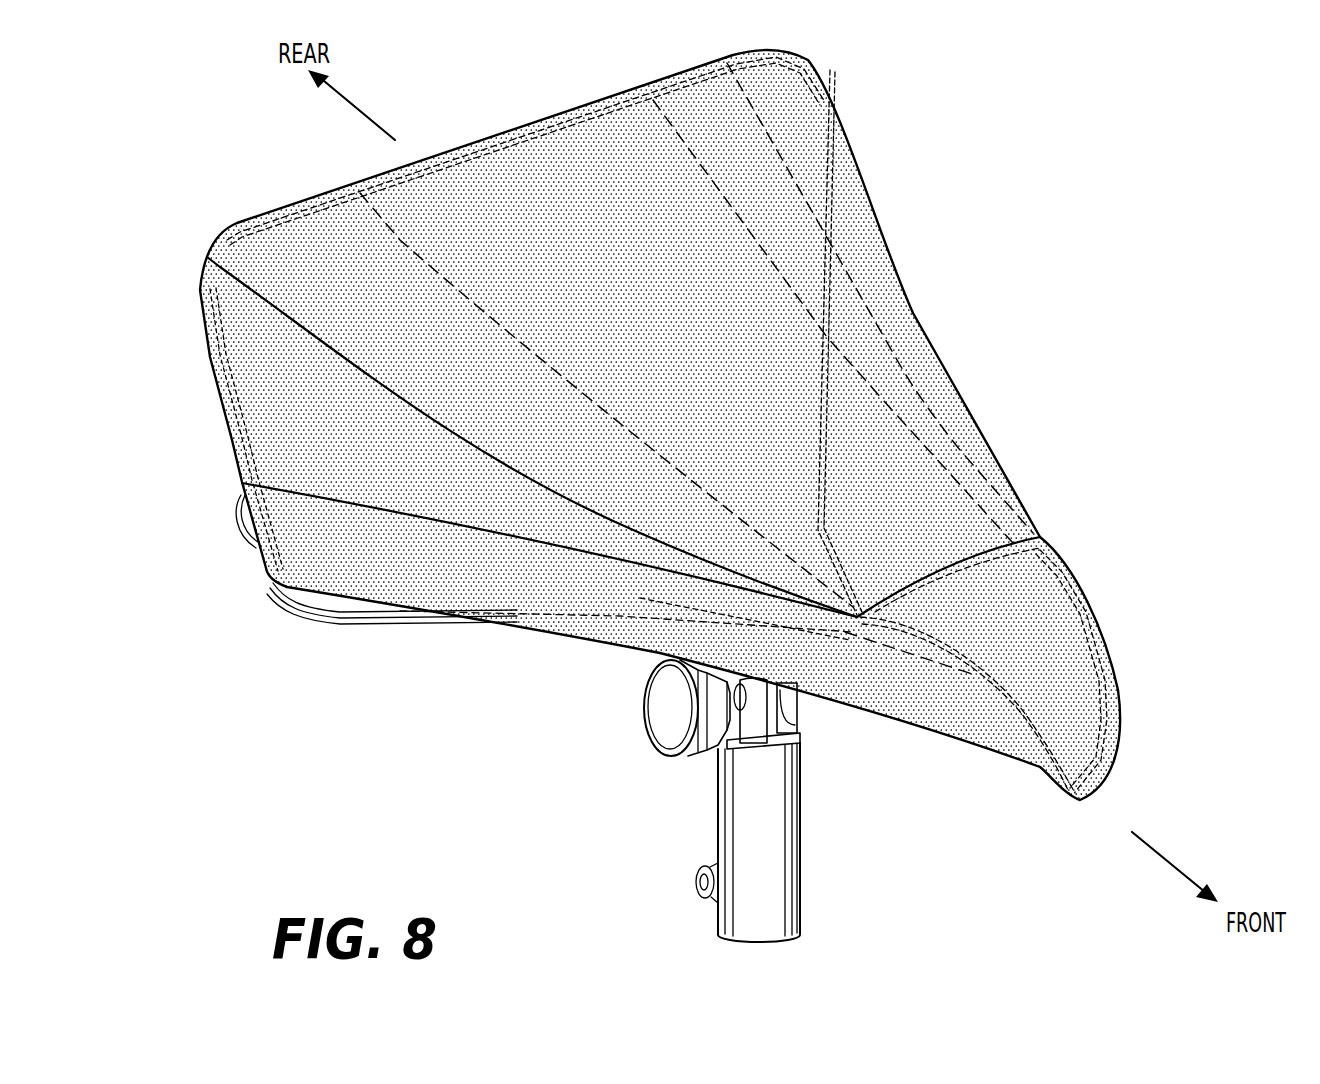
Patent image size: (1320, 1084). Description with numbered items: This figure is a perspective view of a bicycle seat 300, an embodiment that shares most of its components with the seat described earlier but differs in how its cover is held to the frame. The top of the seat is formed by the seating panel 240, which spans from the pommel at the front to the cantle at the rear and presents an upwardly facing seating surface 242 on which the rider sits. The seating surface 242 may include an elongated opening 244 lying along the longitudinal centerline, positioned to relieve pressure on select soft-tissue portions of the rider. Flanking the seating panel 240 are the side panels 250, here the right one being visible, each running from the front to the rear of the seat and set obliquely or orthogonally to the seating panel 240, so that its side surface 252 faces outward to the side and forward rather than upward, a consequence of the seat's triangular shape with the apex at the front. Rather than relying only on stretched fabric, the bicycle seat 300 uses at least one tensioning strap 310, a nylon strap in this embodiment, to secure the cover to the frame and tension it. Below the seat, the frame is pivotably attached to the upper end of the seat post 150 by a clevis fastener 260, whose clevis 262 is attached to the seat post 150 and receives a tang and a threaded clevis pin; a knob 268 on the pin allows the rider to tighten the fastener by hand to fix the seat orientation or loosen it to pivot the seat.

The bicycle seat 300 is at (174, 120).
The tensioning strap 310 is at (835, 233).
The opening 244 is at (787, 390).
The seating panel 240 is at (903, 440).
The seating surface 242 is at (644, 376).
The side surface 252 is at (419, 561).
The side panel 250 is at (550, 583).
The clevis fastener 260 is at (692, 790).
The knob 268 is at (675, 712).
The clevis 262 is at (787, 707).
The seat post 150 is at (783, 917).